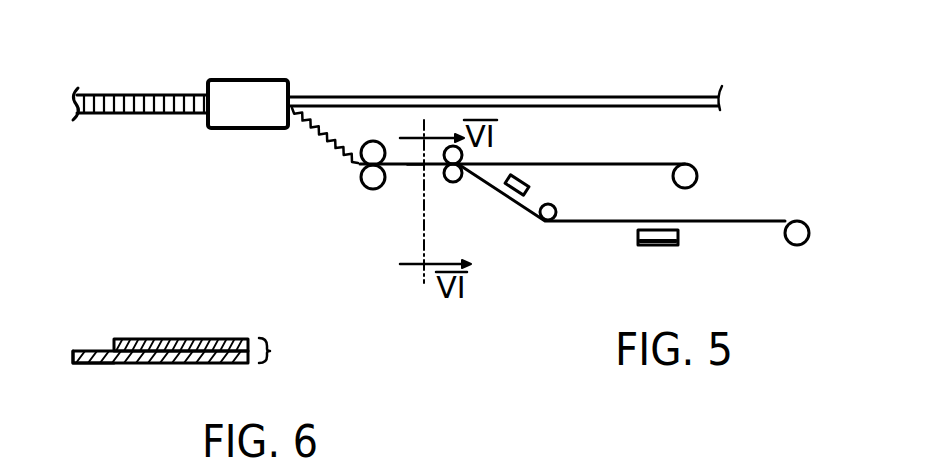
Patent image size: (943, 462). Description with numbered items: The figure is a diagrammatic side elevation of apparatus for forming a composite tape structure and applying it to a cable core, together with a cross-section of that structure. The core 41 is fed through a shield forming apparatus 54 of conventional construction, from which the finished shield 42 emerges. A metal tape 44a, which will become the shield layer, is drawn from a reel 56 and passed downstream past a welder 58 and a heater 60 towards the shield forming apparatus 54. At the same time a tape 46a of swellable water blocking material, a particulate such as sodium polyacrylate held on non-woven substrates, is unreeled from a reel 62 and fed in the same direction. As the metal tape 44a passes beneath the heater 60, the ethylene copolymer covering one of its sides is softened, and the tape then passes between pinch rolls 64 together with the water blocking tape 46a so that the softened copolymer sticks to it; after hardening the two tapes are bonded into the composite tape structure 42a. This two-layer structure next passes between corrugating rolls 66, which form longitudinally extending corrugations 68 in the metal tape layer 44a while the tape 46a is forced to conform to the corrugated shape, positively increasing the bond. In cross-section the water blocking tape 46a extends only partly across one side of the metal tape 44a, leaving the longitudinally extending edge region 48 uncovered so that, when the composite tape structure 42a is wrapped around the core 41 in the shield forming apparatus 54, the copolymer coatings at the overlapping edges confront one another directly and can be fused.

In FIG. 5, the core 41 is at (594, 96).
In FIG. 5, the shield 42 is at (158, 95).
In FIG. 5, the composite tape structure 42a is at (407, 165).
In FIG. 6, the composite tape structure 42a is at (278, 350).
In FIG. 5, the metal tape 44a is at (752, 222).
In FIG. 6, the metal tape 44a is at (205, 364).
In FIG. 5, the swellable water blocking tape 46a is at (608, 163).
In FIG. 6, the swellable water blocking tape 46a is at (157, 339).
In FIG. 6, the longitudinally extending edge region 48 is at (88, 350).
In FIG. 5, the shield forming apparatus 54 is at (267, 115).
In FIG. 5, the reel 56 is at (802, 245).
In FIG. 5, the welder 58 is at (650, 247).
In FIG. 5, the heater 60 is at (532, 185).
In FIG. 5, the reel 62 is at (698, 174).
In FIG. 5, the pinch rolls 64 is at (455, 182).
In FIG. 5, the corrugating rolls 66 is at (372, 189).
In FIG. 5, the corrugations 68 is at (330, 143).